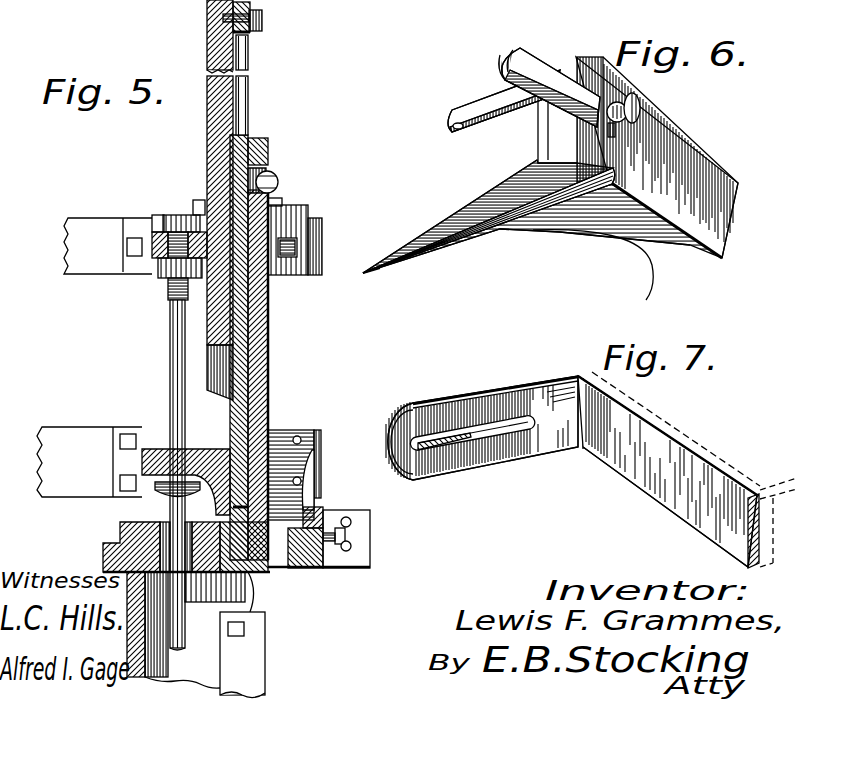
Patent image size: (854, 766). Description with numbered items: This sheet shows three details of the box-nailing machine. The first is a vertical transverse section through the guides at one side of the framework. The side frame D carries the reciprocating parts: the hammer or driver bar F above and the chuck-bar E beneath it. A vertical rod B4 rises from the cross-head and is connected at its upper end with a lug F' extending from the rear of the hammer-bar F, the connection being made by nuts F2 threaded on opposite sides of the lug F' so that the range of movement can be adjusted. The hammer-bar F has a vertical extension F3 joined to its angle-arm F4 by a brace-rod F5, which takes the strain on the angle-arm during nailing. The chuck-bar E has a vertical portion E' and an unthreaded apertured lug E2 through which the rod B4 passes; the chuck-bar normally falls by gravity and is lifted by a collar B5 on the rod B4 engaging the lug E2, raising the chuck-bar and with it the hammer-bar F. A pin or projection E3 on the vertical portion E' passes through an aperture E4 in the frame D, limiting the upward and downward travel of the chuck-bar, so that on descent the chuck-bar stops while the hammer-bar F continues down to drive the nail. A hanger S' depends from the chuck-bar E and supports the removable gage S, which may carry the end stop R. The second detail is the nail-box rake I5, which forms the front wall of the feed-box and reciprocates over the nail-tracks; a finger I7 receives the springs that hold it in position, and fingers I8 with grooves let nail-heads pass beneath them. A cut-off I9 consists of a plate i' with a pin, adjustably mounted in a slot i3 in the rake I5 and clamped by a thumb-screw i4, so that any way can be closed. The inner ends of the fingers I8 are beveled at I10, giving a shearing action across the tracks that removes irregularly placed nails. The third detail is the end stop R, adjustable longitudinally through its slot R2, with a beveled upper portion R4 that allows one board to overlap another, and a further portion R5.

In FIG. 5, the side frame D is at (268, 336).
In FIG. 5, the hammer or driver bar F is at (108, 234).
In FIG. 5, the lug F' is at (165, 226).
In FIG. 5, the nuts F2 is at (170, 215).
In FIG. 5, the vertical extension F3 is at (183, 212).
In FIG. 5, the angle-arm F4 is at (322, 242).
In FIG. 5, the brace-rod F5 is at (250, 98).
In FIG. 5, the chuck-bar E is at (192, 449).
In FIG. 5, the vertical portion E' is at (271, 441).
In FIG. 5, the apertured lug E2 is at (155, 448).
In FIG. 5, the pin or projection E3 is at (278, 182).
In FIG. 5, the aperture E4 is at (280, 148).
In FIG. 5, the vertical rod B4 is at (170, 355).
In FIG. 5, the collar B5 is at (165, 497).
In FIG. 5, the removable gage S is at (319, 551).
In FIG. 5, the hanger S' is at (302, 459).
In FIG. 6, the rake I5 is at (638, 157).
In FIG. 6, the finger I7 is at (480, 100).
In FIG. 6, the finger I8 is at (542, 216).
In FIG. 6, the cut-off I9 is at (647, 107).
In FIG. 6, the beveled inner end I10 is at (386, 275).
In FIG. 6, the plate i' is at (489, 230).
In FIG. 6, the slot i3 is at (617, 134).
In FIG. 6, the thumb-screw i4 is at (637, 94).
In FIG. 7, the end stop R is at (573, 380).
In FIG. 7, the slot R2 is at (490, 432).
In FIG. 7, the beveled portion R4 is at (755, 494).
In FIG. 7, the extension (dotted) R5 is at (767, 545).